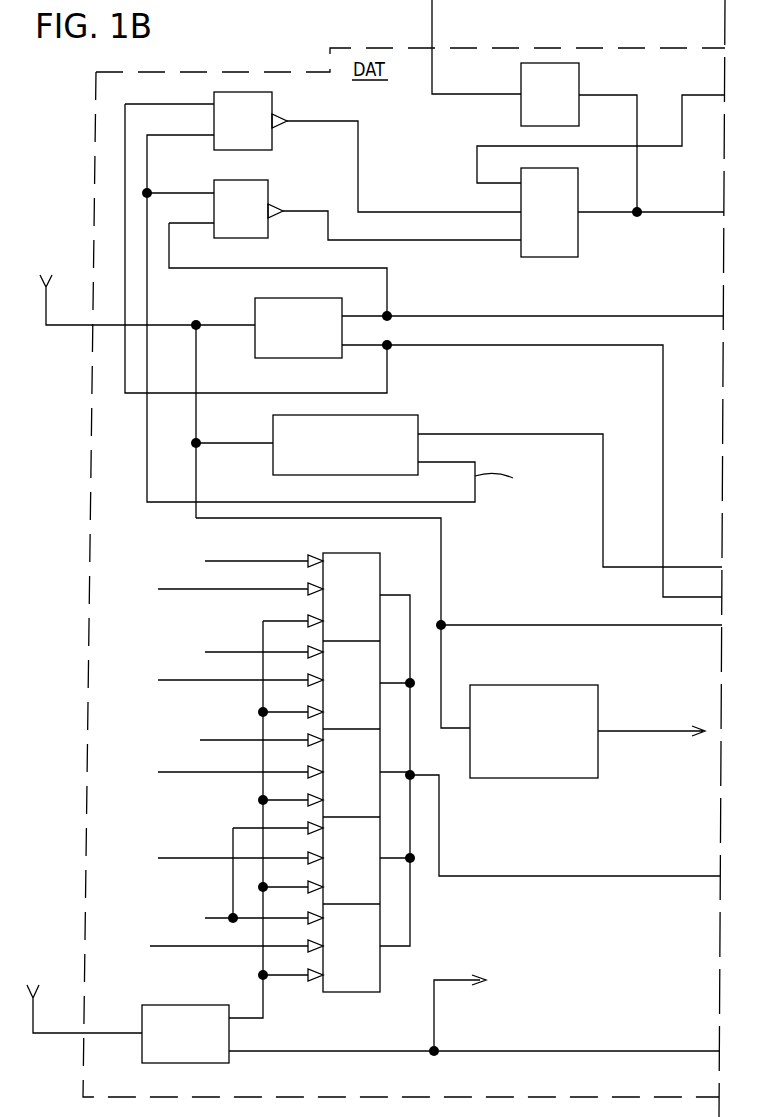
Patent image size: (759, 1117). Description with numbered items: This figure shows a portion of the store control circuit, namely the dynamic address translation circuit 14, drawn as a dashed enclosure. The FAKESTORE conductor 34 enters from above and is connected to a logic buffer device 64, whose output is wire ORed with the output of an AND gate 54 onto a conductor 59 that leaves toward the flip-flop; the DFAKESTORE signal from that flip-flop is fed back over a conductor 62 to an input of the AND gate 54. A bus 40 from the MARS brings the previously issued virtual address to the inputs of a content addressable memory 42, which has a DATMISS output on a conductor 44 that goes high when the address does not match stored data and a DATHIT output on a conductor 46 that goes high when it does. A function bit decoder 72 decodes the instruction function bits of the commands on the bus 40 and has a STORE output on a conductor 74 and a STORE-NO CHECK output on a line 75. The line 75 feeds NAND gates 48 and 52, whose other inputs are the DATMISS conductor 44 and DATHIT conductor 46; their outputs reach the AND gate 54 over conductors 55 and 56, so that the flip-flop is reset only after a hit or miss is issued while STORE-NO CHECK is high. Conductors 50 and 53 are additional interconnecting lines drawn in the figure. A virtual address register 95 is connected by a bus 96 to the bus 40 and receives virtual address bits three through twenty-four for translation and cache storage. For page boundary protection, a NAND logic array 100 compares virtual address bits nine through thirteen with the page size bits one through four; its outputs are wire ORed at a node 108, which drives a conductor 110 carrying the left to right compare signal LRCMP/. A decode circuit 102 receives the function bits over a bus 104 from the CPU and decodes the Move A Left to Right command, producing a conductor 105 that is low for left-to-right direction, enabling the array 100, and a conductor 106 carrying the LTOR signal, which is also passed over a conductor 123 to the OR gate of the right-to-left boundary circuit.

The dynamic address translation circuit 14 is at (326, 70).
The FAKESTORE conductor 34 is at (431, 22).
The bus 40 is at (58, 328).
The content addressable memory 42 is at (252, 305).
The DATMISS conductor 44 is at (623, 316).
The DATHIT conductor 46 is at (535, 348).
The NAND gate 48 is at (260, 185).
The line 50 is at (265, 268).
The NAND gate 52 is at (268, 103).
The line 53 is at (246, 392).
The AND gate 54 is at (570, 245).
The conductor 55 is at (440, 242).
The conductor 56 is at (465, 211).
The conductor 59 is at (690, 212).
The conductor 62 is at (480, 146).
The logic buffer device 64 is at (519, 76).
The function bit decoder 72 is at (273, 462).
The conductor 74 is at (580, 434).
The STORE-NO CHECK line 75 is at (462, 505).
The virtual address register 95 is at (535, 685).
The bus 96 is at (442, 590).
The NAND logic array 100 is at (335, 552).
The decode circuit 102 is at (182, 1005).
The bus 104 is at (122, 1033).
The conductor 105 is at (263, 1005).
The conductor 106 is at (532, 1051).
The node 108 is at (412, 772).
The conductor 110 is at (592, 878).
The conductor 123 is at (452, 980).